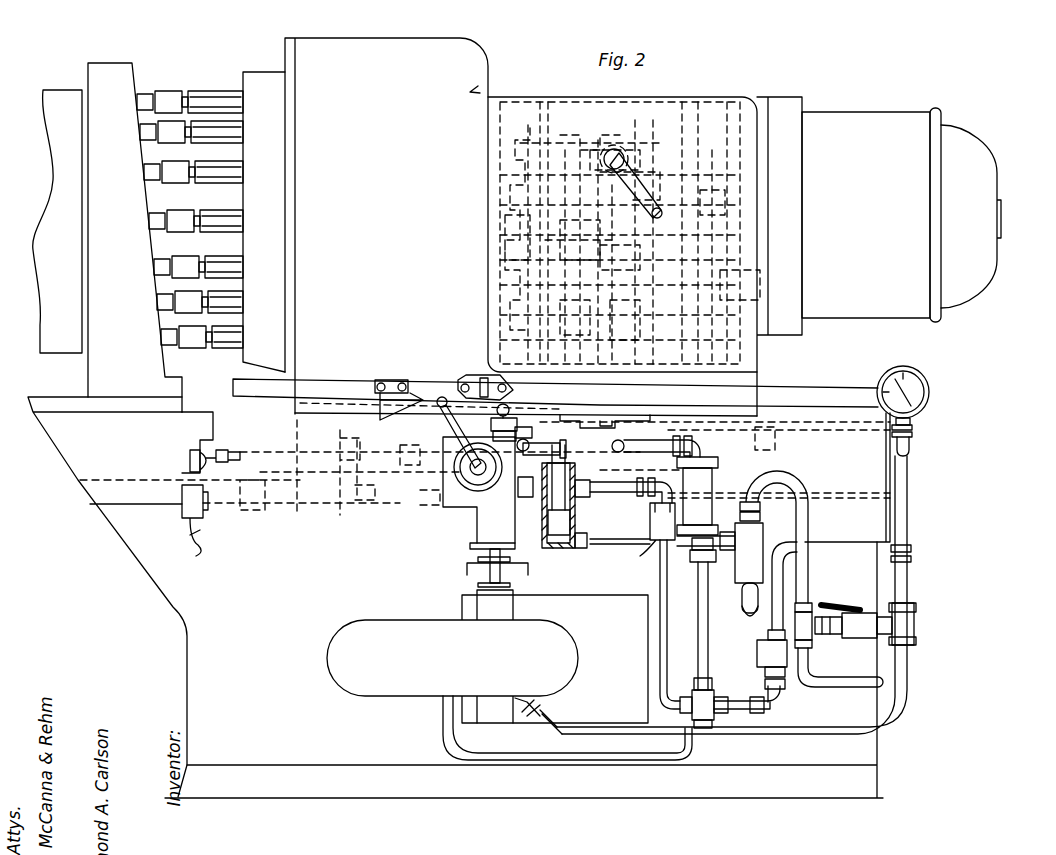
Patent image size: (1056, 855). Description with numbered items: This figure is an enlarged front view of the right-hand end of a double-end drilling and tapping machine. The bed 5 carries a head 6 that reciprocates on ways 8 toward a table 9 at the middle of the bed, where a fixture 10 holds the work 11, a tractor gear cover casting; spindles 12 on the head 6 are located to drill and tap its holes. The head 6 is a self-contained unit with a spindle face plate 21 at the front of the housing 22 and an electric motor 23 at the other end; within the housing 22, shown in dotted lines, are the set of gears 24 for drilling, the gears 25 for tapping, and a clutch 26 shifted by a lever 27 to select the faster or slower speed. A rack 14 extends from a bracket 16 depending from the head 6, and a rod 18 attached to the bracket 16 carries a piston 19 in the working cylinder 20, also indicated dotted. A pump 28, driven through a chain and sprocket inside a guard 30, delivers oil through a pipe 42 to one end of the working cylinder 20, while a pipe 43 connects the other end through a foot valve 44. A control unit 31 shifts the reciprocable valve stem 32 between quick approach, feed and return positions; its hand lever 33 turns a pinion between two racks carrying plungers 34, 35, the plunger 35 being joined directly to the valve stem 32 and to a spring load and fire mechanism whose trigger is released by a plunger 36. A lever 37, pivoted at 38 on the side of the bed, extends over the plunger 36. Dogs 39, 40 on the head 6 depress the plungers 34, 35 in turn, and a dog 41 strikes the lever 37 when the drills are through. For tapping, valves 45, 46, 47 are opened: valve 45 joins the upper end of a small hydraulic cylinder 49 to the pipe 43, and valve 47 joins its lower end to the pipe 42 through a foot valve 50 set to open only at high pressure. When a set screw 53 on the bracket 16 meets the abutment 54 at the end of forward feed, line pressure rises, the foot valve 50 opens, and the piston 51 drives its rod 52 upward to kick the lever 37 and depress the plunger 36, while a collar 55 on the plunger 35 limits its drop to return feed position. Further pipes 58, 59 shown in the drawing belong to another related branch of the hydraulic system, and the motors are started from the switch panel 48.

The bed 5 is at (880, 752).
The head 6 is at (471, 92).
The ways 8 is at (822, 387).
The table 9 is at (190, 410).
The fixture 10 is at (153, 375).
The work 11 is at (54, 94).
The spindles 12 is at (209, 88).
The racks 14 is at (240, 506).
The bracket 16 is at (314, 515).
The rod 18 is at (398, 479).
The piston 19 is at (760, 441).
The working cylinder 20 is at (825, 497).
The spindle face plate 21 is at (290, 52).
The housing 22 is at (693, 98).
The electric motor 23 is at (888, 113).
The set of gears for drilling 24 is at (600, 332).
The gears for tapping 25 is at (580, 251).
The clutch 26 is at (600, 138).
The lever 27 is at (640, 180).
The pump 28 is at (583, 597).
The guard 30 is at (376, 620).
The control unit 31 is at (486, 524).
The valve stem 32 is at (467, 568).
The hand lever 33 is at (448, 424).
The plunger 34 is at (448, 437).
The plunger 35 is at (506, 404).
The plunger 36 is at (540, 439).
The lever 37 is at (565, 415).
The pivot 38 is at (520, 480).
The dog 39 is at (394, 420).
The dog 40 is at (469, 378).
The dog 41 is at (612, 420).
The pipe 42 is at (795, 727).
The pipe 43 is at (700, 752).
The foot valve 44 is at (713, 482).
The valve 45 is at (648, 516).
The valve 46 is at (757, 650).
The valve 47 is at (858, 614).
The switch panel 48 is at (182, 515).
The hydraulic cylinder 49 is at (547, 517).
The foot valve 50 is at (738, 568).
The piston 51 is at (576, 520).
The rod 52 is at (562, 466).
The set screw 53 is at (232, 452).
The stop 54 is at (196, 445).
The collar 55 is at (491, 423).
The pipe 58 is at (835, 678).
The pipe 59 is at (830, 548).